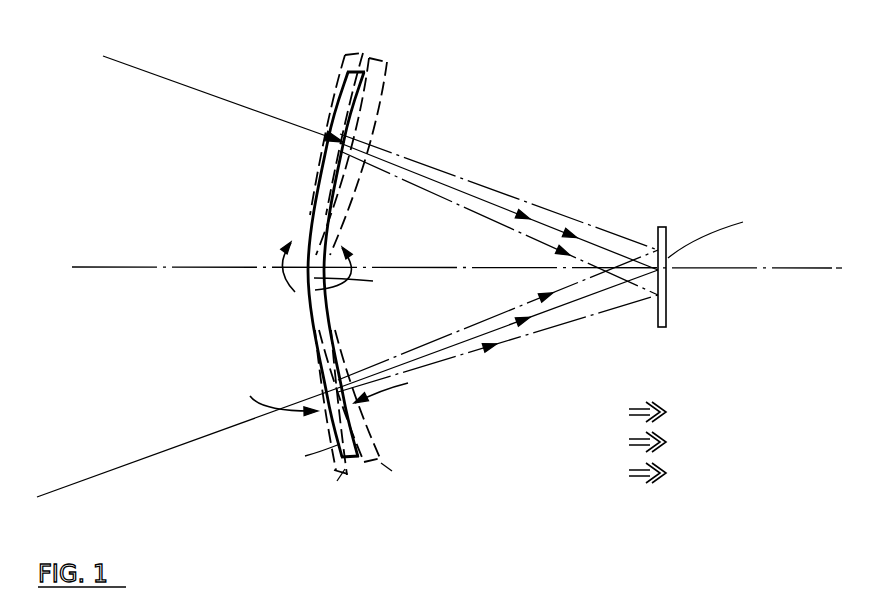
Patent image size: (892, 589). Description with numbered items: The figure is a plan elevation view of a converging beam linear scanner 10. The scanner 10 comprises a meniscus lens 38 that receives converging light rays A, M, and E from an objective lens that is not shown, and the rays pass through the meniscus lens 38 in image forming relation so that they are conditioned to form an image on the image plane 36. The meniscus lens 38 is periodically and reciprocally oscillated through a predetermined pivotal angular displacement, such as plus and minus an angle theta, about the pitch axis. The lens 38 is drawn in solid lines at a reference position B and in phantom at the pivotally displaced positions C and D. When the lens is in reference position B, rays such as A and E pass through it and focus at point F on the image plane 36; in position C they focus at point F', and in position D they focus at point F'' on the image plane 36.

The converging beam linear scanner 10 is at (545, 148).
The image plane 36 is at (658, 249).
The meniscus lens 38 is at (368, 57).